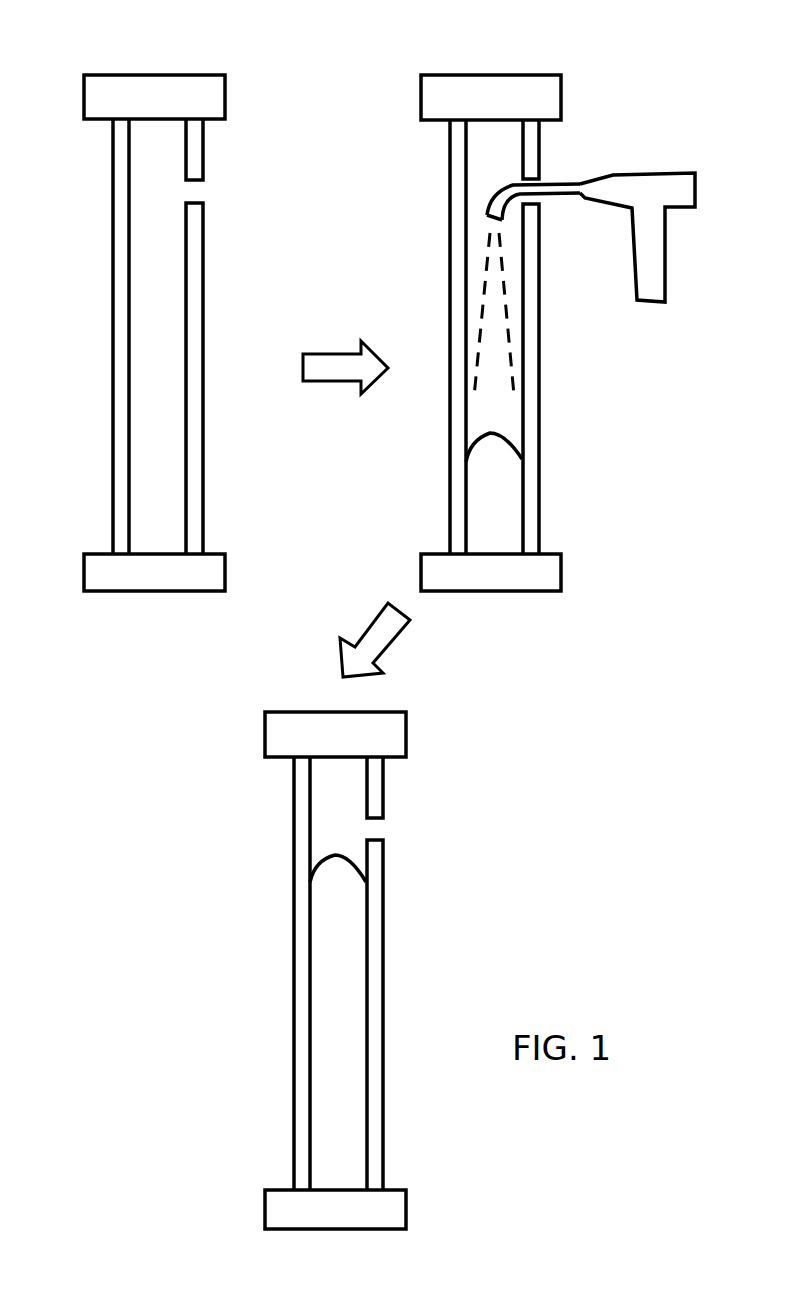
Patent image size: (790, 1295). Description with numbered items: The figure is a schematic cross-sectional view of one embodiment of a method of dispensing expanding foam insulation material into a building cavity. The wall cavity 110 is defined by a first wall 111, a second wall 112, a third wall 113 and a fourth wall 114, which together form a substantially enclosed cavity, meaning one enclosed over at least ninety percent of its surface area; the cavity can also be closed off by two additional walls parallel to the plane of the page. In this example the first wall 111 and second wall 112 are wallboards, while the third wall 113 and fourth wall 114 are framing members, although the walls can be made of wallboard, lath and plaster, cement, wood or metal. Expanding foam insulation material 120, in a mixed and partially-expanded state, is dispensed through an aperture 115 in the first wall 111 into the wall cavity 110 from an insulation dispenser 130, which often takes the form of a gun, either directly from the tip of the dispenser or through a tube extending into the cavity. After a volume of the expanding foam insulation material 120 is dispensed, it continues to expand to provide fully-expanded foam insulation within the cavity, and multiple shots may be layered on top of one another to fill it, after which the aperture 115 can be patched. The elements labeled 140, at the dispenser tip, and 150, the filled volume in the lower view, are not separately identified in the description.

The wall cavity 110 is at (142, 193).
The first wall 111 is at (195, 315).
The second wall 112 is at (118, 257).
The third wall 113 is at (125, 90).
The fourth wall 114 is at (147, 572).
The aperture 115 is at (218, 190).
The expanding foam insulation material 120 is at (494, 468).
The insulation dispenser 130 is at (653, 190).
The nozzle tip of dispensing tool 140 is at (490, 208).
The filled liquid sample 150 is at (338, 936).